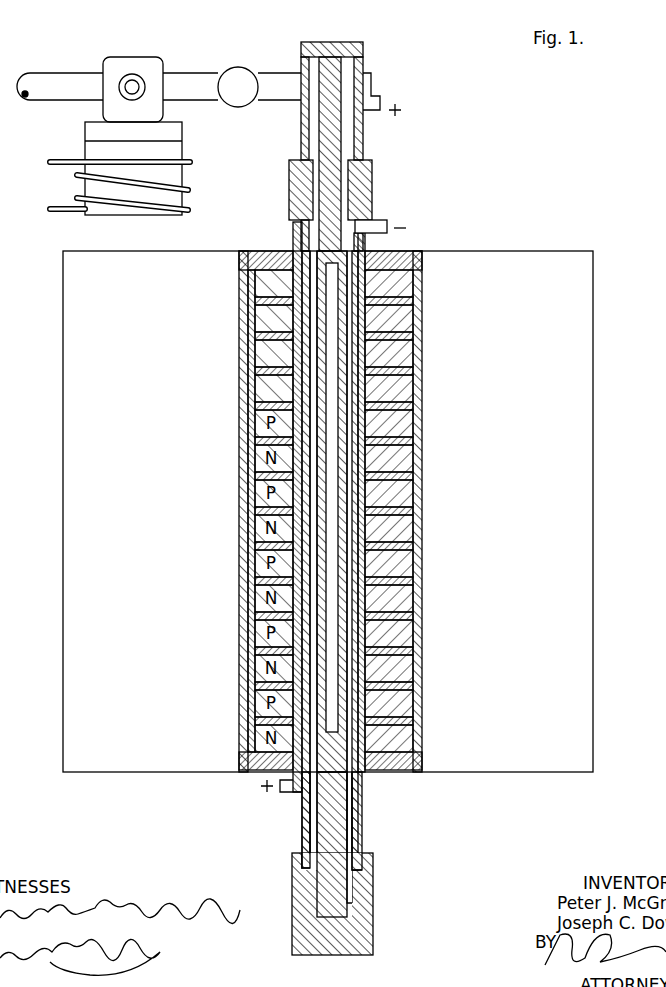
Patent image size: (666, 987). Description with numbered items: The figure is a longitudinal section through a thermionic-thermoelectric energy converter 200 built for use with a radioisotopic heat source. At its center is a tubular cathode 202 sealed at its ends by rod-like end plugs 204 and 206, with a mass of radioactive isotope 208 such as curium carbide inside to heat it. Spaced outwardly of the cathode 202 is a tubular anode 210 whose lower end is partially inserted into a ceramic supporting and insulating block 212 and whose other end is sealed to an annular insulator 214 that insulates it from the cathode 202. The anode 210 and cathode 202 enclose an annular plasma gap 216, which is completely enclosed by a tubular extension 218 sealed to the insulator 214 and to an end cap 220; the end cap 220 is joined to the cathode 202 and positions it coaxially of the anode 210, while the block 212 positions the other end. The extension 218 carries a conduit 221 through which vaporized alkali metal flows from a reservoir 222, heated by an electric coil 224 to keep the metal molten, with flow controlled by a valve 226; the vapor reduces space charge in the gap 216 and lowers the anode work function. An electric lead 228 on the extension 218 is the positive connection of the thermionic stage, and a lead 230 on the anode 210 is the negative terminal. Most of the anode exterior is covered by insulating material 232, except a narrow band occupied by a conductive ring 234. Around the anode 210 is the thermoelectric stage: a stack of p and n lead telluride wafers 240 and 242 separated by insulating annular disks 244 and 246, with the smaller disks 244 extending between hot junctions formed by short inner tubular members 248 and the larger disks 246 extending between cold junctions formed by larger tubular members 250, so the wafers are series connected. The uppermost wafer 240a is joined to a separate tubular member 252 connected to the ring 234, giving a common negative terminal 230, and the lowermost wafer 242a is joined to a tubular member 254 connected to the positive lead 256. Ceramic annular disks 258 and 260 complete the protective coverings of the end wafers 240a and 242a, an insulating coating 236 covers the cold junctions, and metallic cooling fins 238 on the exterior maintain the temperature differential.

The converter 200 is at (644, 308).
The cathode 202 is at (340, 568).
The end plug 204 is at (339, 123).
The end plug 206 is at (335, 828).
The radioactive isotope 208 is at (330, 530).
The anode 210 is at (357, 640).
The supporting and insulating block 212 is at (358, 948).
The annular insulator 214 is at (372, 190).
The plasma gap 216 is at (353, 598).
The tubular extension 218 is at (365, 131).
The end cap 220 is at (335, 42).
The conduit 221 is at (182, 75).
The reservoir 222 is at (85, 148).
The electric coil 224 is at (190, 188).
The valve 226 is at (240, 67).
The electric lead 228 is at (377, 104).
The lead 230 is at (383, 221).
The insulating material 232 is at (304, 235).
The conductive ring 234 is at (388, 251).
The insulating coating 236 is at (418, 707).
The cooling fins 238 is at (593, 455).
The p-type thermoelectric wafer 240 is at (262, 357).
The uppermost wafer 240a is at (262, 288).
The n-type thermoelectric wafer 242 is at (262, 323).
The lowermost wafer 242a is at (397, 738).
The annular disk 244 is at (262, 442).
The annular disk 246 is at (262, 477).
The tubular member 248 is at (262, 581).
The tubular member 250 is at (243, 698).
The tubular member 252 is at (422, 274).
The tubular member 254 is at (245, 757).
The lead 256 is at (290, 794).
The ceramic annular disk 258 is at (248, 252).
The ceramic annular disk 260 is at (393, 771).